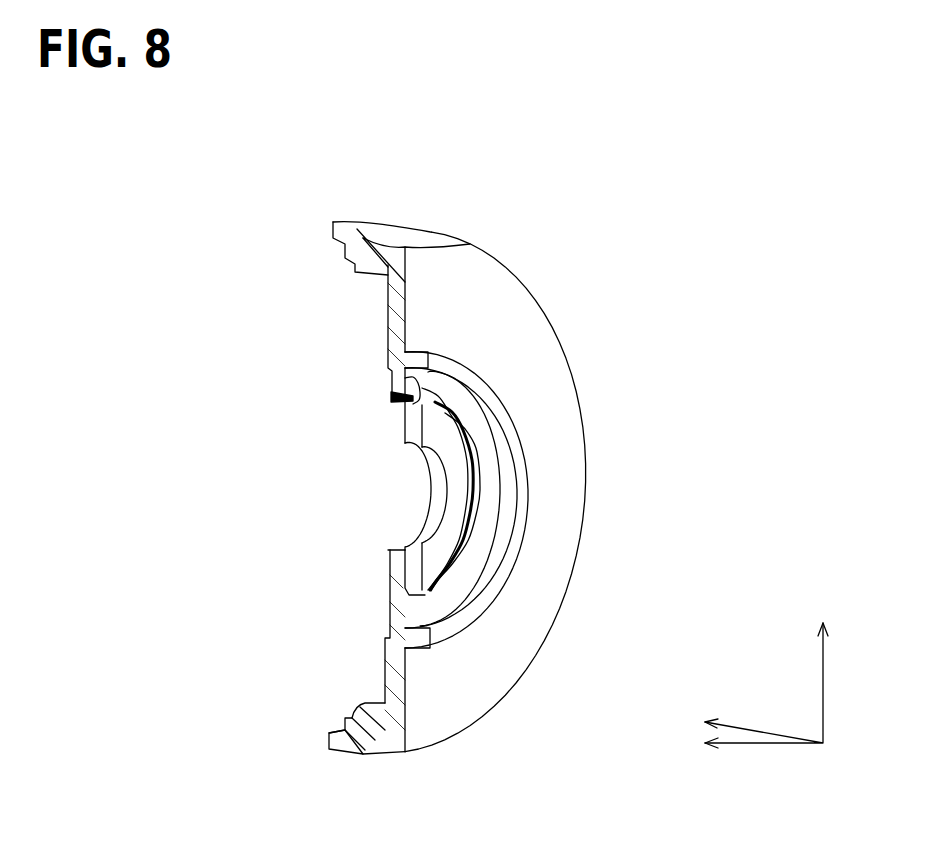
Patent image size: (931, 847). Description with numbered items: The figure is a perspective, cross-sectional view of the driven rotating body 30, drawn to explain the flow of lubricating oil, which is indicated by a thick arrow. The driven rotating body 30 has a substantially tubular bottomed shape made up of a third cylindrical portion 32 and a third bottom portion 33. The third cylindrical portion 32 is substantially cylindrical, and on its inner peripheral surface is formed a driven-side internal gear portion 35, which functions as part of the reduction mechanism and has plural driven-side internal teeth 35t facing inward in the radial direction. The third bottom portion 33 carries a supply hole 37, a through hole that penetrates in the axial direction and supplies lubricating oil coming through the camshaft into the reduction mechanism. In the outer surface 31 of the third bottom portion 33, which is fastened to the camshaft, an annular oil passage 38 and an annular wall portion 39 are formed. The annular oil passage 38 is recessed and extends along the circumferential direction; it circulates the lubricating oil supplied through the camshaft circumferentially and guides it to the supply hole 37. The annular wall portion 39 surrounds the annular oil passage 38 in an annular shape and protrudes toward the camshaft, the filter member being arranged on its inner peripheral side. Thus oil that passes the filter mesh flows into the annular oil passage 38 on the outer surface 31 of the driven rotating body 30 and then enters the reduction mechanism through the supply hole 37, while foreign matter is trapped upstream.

The driven rotating body 30 is at (513, 263).
The outer surface 31 is at (562, 492).
The third cylindrical portion 32 is at (373, 750).
The third bottom portion 33 is at (388, 311).
The driven-side internal gear portion 35 is at (385, 703).
The driven-side internal teeth 35t is at (367, 728).
The supply hole 37 is at (390, 389).
The annular oil passage 38 is at (398, 599).
The annular wall portion 39 is at (513, 400).